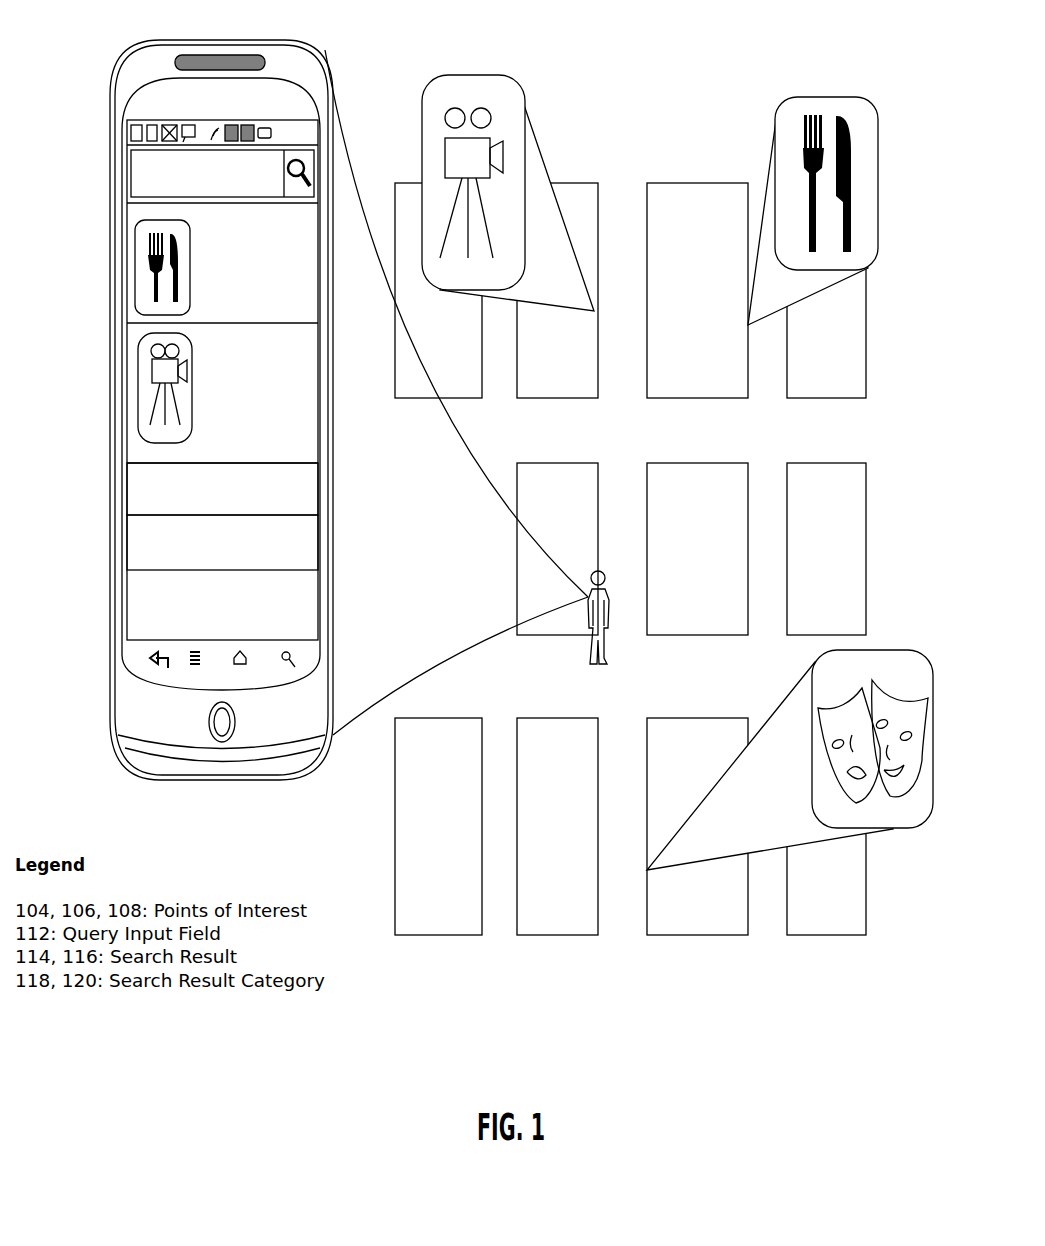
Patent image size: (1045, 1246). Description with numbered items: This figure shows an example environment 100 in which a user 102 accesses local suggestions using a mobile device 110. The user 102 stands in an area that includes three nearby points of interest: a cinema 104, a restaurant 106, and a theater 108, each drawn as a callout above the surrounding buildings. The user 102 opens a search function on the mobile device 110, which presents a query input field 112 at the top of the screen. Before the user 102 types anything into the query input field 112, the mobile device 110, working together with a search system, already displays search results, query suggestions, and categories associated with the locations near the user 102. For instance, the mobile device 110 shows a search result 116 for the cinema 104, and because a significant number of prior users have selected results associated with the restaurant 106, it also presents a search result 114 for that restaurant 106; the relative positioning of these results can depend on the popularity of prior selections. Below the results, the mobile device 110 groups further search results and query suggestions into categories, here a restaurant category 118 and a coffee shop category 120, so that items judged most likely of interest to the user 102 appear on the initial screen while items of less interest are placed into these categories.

The environment 100 is at (668, 148).
The user 102 is at (602, 571).
The cinema 104 is at (495, 75).
The restaurant 106 is at (810, 97).
The theater 108 is at (886, 650).
The mobile device 110 is at (318, 52).
The query input field 112 is at (128, 170).
The search result 114 is at (126, 270).
The search result 116 is at (126, 398).
The restaurant category 118 is at (126, 495).
The coffee shop category 120 is at (126, 548).